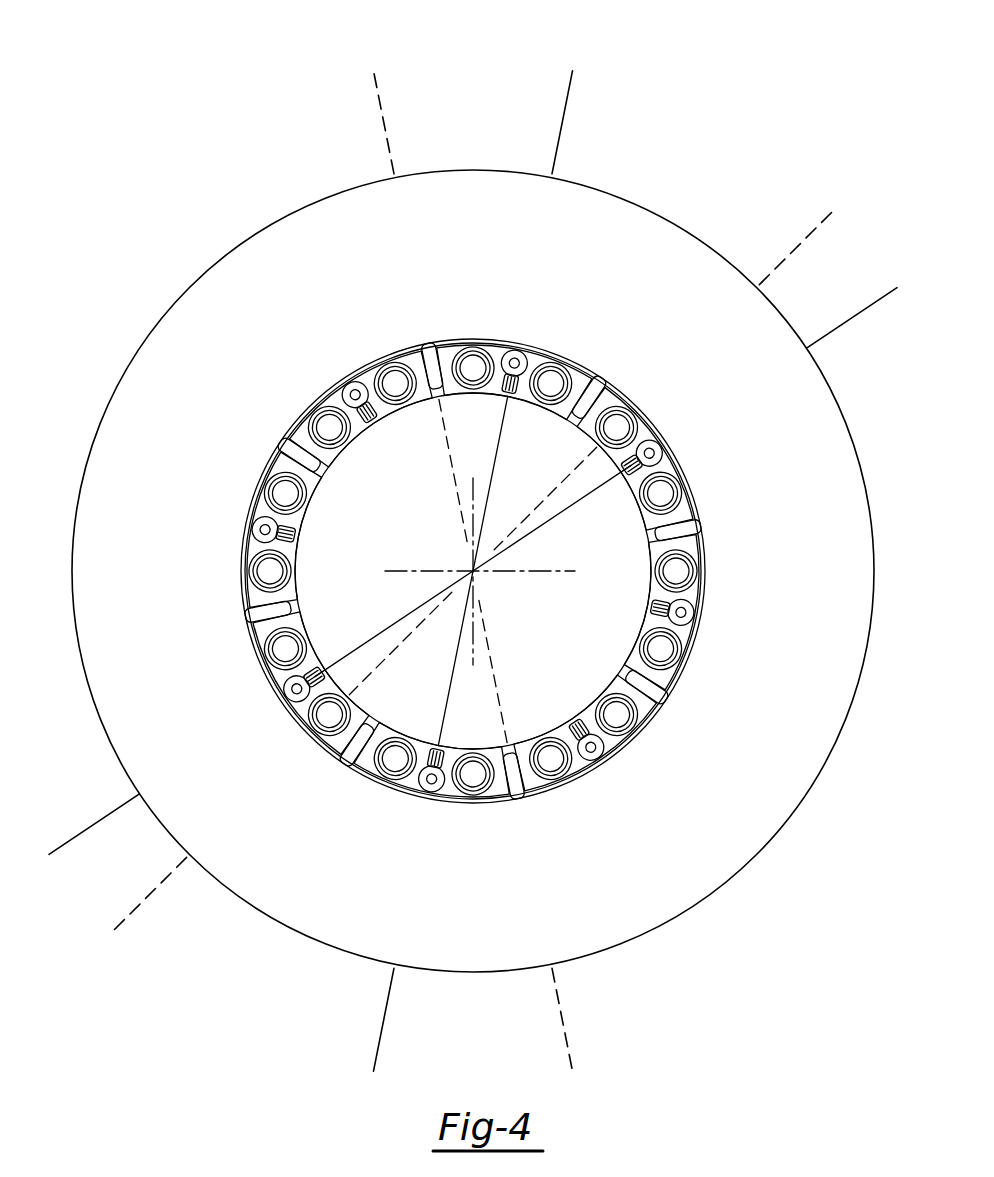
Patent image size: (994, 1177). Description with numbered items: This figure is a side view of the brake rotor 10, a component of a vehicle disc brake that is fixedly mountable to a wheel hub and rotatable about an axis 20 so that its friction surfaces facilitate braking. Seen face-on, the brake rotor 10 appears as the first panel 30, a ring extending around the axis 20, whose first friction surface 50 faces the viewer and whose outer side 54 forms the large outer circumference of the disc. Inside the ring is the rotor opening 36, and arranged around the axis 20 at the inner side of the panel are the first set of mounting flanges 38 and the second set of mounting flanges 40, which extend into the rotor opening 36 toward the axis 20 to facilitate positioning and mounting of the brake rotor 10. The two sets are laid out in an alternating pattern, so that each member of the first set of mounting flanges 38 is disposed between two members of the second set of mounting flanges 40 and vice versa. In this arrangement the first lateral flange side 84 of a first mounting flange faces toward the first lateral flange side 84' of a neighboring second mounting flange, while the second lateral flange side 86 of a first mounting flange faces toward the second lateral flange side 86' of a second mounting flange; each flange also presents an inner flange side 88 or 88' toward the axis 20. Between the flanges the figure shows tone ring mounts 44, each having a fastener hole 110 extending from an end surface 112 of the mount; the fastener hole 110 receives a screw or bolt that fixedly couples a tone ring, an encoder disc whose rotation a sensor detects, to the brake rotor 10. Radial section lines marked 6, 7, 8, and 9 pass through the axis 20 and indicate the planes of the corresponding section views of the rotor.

The brake rotor 10 is at (712, 88).
The axis 20 is at (478, 574).
The first panel 30 is at (473, 608).
The outer side 54 is at (680, 913).
The rotor opening 36 is at (437, 536).
The first set of mounting flanges 38 is at (473, 571).
The second set of mounting flanges 40 is at (472, 570).
The tone ring mount 44 is at (473, 543).
The end surface 112 is at (519, 348).
The fastener hole 110 is at (522, 356).
The first friction surface 50 is at (725, 369).
The first lateral flange side 84 is at (470, 566).
The first lateral flange side 84' is at (473, 574).
The second lateral flange side 86 is at (475, 575).
The second lateral flange side 86' is at (477, 570).
The inner flange side 88 is at (473, 571).
The inner flange side 88' is at (472, 570).
The section line 6 is at (361, 132).
The section line 7 is at (539, 118).
The section line 8 is at (836, 285).
The section line 9 is at (781, 221).